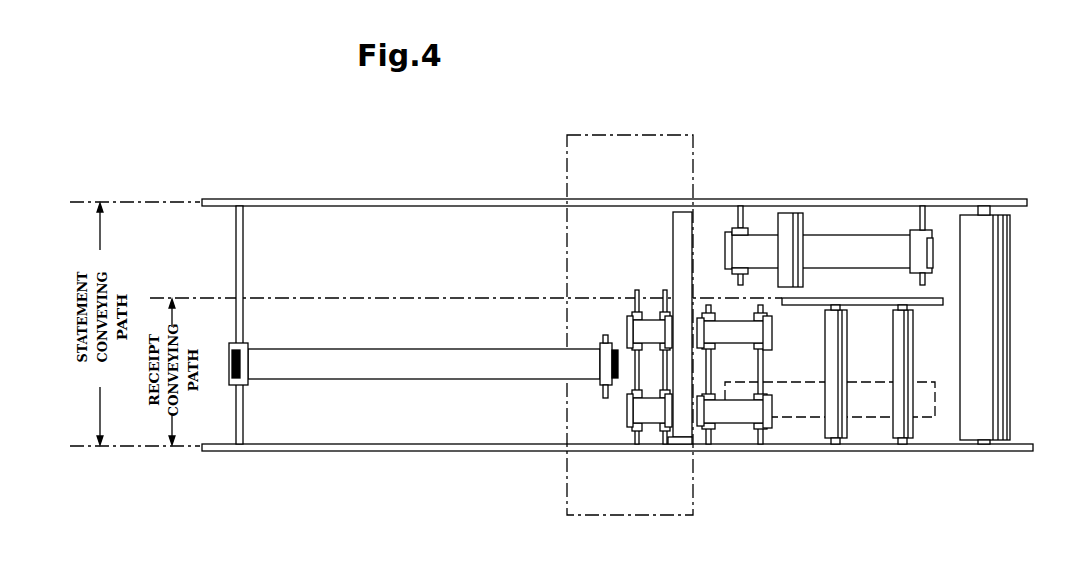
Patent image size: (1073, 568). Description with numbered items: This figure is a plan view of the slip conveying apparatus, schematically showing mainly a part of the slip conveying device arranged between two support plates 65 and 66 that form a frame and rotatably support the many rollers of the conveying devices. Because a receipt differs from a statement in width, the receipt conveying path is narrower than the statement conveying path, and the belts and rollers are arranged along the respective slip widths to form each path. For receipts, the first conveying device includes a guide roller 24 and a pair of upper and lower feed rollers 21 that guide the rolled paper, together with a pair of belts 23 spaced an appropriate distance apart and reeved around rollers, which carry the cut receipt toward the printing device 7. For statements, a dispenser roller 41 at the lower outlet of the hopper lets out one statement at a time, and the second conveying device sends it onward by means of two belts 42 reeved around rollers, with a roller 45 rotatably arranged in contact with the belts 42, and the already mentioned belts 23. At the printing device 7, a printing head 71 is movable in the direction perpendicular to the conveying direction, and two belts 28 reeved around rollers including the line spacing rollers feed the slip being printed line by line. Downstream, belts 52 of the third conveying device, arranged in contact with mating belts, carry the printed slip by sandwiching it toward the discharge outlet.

The printing device 7 is at (700, 140).
The feed rollers 21 is at (832, 428).
The belts 23 is at (752, 328).
The guide roller 24 is at (897, 433).
The belts 28 is at (655, 328).
The dispenser roller 41 is at (1003, 292).
The belts 42 is at (870, 243).
The roller 45 is at (786, 217).
The belts 52 is at (427, 372).
The support plate 65 is at (963, 205).
The support plate 66 is at (933, 306).
The printing head 71 is at (685, 432).